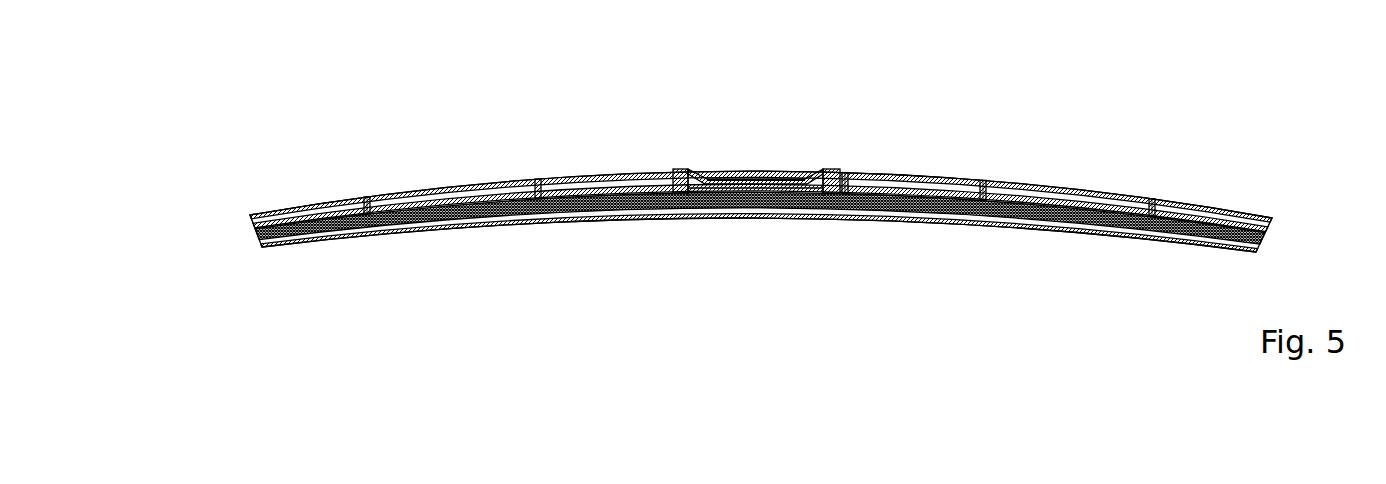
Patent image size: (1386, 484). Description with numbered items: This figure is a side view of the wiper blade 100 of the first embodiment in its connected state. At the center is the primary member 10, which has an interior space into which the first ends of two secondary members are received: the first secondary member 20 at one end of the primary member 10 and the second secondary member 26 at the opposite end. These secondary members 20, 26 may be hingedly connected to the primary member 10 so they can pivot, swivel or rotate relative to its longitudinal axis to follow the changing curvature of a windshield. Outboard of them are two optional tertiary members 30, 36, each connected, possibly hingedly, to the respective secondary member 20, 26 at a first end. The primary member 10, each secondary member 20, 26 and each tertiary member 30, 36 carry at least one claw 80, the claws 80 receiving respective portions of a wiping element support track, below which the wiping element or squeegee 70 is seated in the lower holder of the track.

The wiper blade 100 is at (731, 234).
The primary member 10 is at (767, 178).
The first secondary member 20 is at (761, 117).
The second secondary member 26 is at (1037, 186).
The tertiary member 30 is at (320, 203).
The tertiary member 36 is at (1204, 204).
The wiping element/squeegee 70 is at (270, 243).
The claw element 80 is at (298, 233).